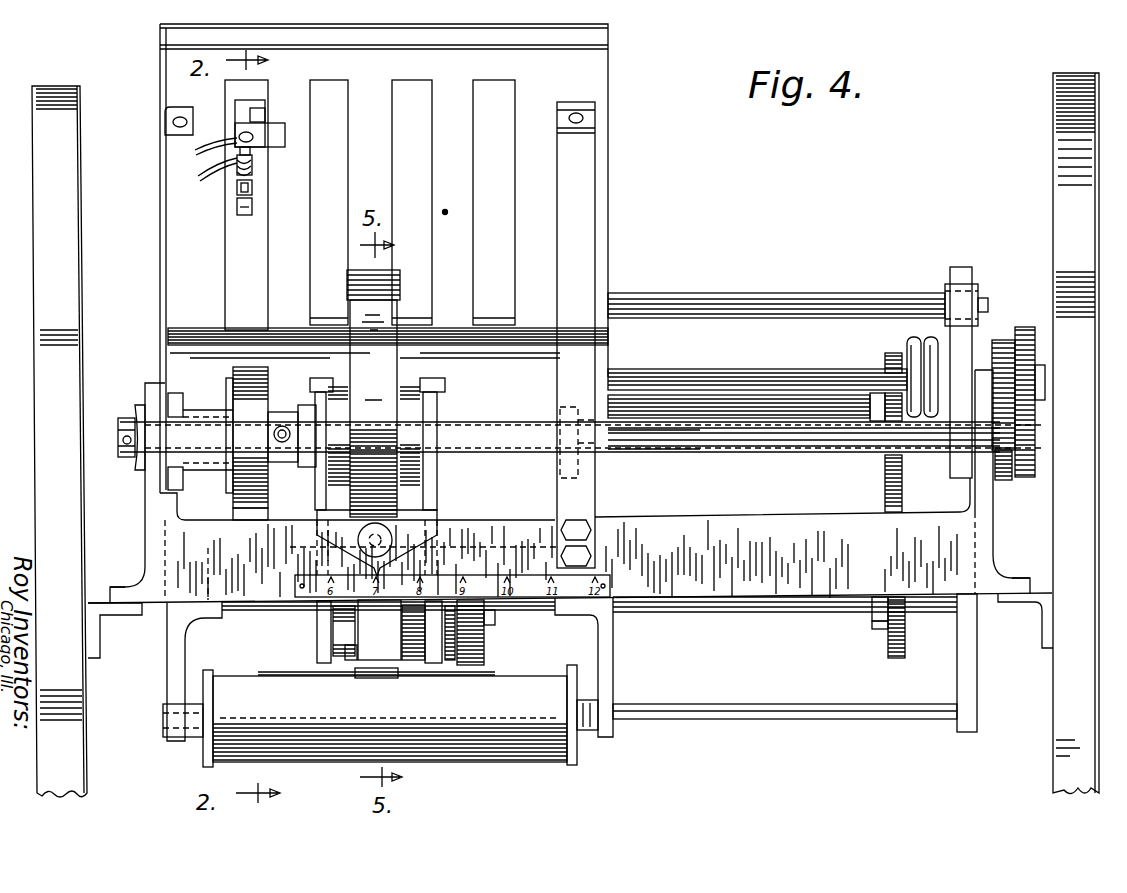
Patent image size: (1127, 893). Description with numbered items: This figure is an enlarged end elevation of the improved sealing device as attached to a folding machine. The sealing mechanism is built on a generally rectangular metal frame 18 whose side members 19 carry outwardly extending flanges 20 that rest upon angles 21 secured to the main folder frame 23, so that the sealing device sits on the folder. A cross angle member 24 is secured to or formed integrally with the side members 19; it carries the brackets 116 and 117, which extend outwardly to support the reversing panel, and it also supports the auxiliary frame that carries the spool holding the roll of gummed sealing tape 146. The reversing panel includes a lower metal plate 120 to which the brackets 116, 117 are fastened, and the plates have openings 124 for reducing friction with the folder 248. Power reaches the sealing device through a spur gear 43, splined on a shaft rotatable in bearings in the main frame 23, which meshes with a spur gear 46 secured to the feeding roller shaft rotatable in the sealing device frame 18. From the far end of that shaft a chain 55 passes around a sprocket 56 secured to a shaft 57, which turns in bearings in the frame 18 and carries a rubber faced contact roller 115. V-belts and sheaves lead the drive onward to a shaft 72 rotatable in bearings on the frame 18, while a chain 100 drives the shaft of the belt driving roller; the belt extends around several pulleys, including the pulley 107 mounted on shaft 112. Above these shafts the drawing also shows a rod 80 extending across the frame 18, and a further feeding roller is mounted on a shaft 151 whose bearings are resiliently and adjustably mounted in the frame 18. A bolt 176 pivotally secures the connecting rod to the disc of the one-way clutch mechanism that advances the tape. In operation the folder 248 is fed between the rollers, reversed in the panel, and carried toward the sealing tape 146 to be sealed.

The metal frame 18 is at (1024, 523).
The side members 19 is at (150, 510).
The outwardly extending flanges 20 is at (120, 590).
The angles 21 is at (122, 615).
The main folder frame 23 is at (565, 435).
The cross angle member 24 is at (706, 522).
The spur gear 43 is at (1006, 480).
The spur gear 46 is at (1002, 338).
The chain 55 is at (1036, 355).
The sprocket 56 is at (880, 630).
The shaft 57 is at (835, 432).
The shaft 72 is at (813, 380).
The rod 80 is at (858, 302).
The chain 100 is at (885, 486).
The pulley 107 is at (475, 703).
The shaft 112 is at (794, 710).
The rubber faced contact roller 115 is at (243, 410).
The bracket 116 is at (595, 502).
The bracket 117 is at (160, 345).
The metal plate 120 is at (470, 76).
The openings 124 is at (258, 260).
The roll of gummed sealing tape 146 is at (374, 393).
The shaft 151 is at (710, 452).
The bolt 176 is at (472, 628).
The folder 248 is at (490, 670).